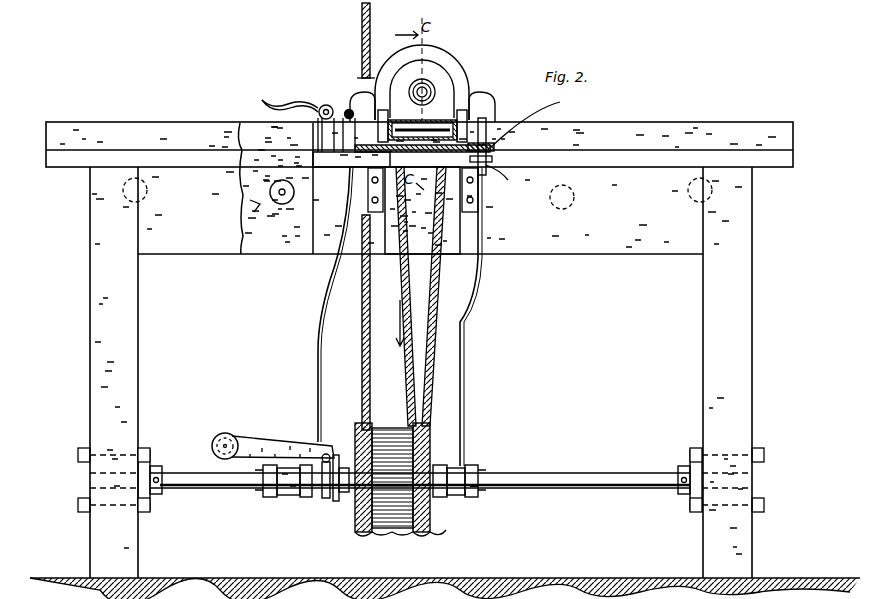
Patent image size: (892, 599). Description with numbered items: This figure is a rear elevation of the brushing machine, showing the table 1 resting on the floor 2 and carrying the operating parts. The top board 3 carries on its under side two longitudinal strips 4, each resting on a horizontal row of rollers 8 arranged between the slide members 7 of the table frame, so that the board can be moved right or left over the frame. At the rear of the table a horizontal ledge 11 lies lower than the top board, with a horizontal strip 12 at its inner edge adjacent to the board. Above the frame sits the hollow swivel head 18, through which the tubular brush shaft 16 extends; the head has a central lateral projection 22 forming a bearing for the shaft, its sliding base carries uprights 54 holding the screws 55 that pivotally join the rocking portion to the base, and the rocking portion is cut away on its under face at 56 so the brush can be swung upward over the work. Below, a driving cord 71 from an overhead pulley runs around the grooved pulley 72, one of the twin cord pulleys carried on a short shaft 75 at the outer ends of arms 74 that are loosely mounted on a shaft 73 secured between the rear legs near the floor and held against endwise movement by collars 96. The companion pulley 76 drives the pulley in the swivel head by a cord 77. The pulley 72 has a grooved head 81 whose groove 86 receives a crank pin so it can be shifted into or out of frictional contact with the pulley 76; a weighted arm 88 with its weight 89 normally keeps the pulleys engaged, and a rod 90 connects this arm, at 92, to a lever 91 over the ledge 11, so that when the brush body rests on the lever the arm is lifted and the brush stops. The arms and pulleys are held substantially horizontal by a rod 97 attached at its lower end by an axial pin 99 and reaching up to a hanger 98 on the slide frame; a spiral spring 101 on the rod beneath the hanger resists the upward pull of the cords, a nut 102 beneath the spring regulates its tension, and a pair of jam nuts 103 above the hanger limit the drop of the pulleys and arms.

The table 1 is at (421, 372).
The floor 2 is at (566, 576).
The top board 3 is at (252, 128).
The longitudinal strips 4 is at (274, 202).
The slide members 7 is at (242, 204).
The rollers 8 is at (148, 186).
The ledge 11 is at (605, 165).
The strip 12 is at (652, 130).
The shaft 16 is at (432, 86).
The swivel head 18 is at (428, 64).
The lateral projection 22 is at (430, 94).
The uprights 54 is at (352, 165).
The screws 55 is at (504, 104).
The cut-away portion 56 is at (416, 120).
The driving cord 71 is at (362, 340).
The grooved pulley 72 is at (360, 532).
The shaft 73 is at (598, 476).
The arms 74 is at (288, 497).
The short shaft 75 is at (296, 500).
The cord pulley 76 is at (402, 543).
The cord 77 is at (430, 345).
The grooved head 81 is at (326, 500).
The groove 86 is at (332, 492).
The weighted arm 88 is at (280, 442).
The weight 89 is at (222, 434).
The rod 90 is at (318, 350).
The lever 91 is at (284, 104).
The connection 92 is at (348, 110).
The collars 96 is at (262, 494).
The rod 97 is at (462, 330).
The hanger 98 is at (500, 158).
The axial pin 99 is at (478, 490).
The spiral spring 101 is at (492, 170).
The nut 102 is at (506, 191).
The jam nuts 103 is at (531, 122).